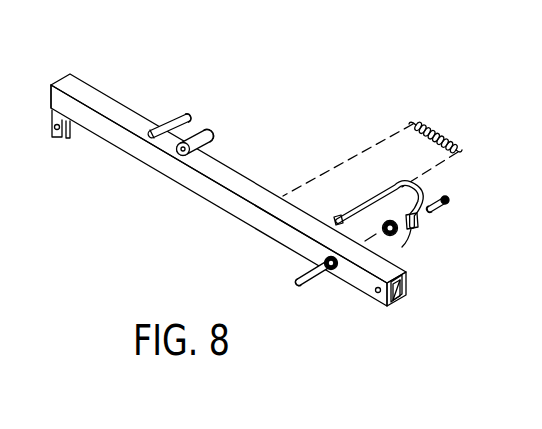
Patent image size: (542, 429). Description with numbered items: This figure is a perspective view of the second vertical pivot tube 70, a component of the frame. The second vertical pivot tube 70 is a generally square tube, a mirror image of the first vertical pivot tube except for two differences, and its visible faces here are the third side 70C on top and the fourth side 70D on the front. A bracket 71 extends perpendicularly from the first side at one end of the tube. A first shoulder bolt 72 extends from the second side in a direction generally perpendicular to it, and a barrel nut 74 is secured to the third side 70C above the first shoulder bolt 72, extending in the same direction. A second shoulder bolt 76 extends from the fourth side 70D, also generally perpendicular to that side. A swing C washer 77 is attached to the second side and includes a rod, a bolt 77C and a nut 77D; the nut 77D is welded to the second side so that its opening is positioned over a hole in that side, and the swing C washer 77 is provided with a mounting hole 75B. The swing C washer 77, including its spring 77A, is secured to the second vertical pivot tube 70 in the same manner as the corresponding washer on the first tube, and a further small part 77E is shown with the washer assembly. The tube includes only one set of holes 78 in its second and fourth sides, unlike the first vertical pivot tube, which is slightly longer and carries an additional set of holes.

The second vertical pivot tube 70 is at (192, 205).
The third side 70C is at (88, 98).
The fourth side 70D is at (122, 140).
The bracket 71 is at (53, 133).
The first shoulder bolt 72 is at (182, 117).
The barrel nut 74 is at (210, 137).
The second shoulder bolt 76 is at (302, 285).
The holes 78 is at (391, 308).
The swing C washer 77 is at (418, 186).
The spring 77A is at (433, 125).
The bolt 77C is at (445, 199).
The nut 77D is at (393, 234).
The rod lower end 77E is at (419, 232).
The mounting hole 75B is at (416, 226).